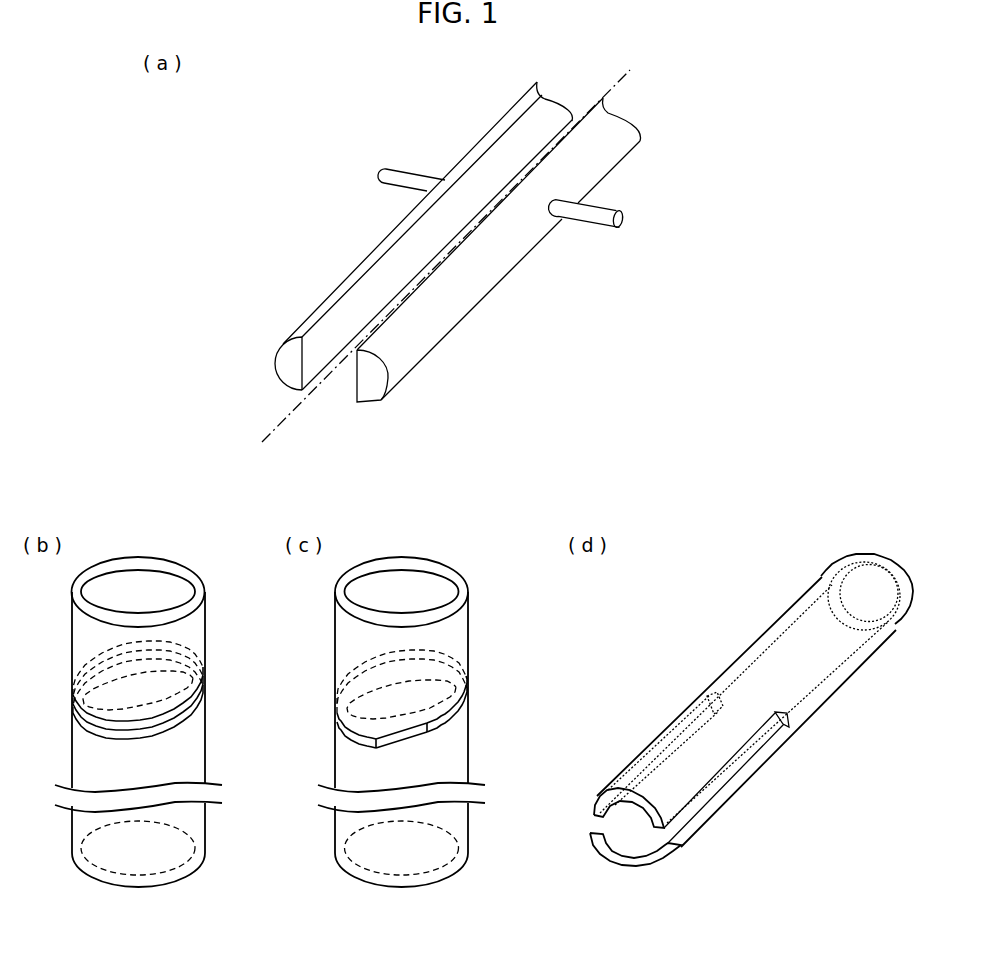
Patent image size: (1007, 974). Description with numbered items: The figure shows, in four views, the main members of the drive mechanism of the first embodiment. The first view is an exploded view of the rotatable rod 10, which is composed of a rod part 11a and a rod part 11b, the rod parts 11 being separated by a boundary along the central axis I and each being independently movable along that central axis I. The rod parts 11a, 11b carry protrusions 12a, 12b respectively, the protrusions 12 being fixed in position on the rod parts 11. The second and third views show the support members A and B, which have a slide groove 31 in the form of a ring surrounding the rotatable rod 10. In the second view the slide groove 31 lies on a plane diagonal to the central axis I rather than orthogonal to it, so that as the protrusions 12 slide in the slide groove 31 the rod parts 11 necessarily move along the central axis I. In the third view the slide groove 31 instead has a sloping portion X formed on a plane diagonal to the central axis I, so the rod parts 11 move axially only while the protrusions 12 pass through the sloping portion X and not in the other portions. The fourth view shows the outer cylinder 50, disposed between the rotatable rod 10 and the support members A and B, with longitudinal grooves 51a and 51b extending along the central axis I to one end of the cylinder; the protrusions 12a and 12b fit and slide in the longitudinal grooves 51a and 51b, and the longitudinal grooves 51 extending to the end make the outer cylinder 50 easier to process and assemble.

The rotatable rod 10 is at (431, 285).
The rod parts 11 is at (458, 291).
The rod part 11a is at (372, 393).
The rod part 11b is at (295, 363).
The protrusions 12 is at (511, 258).
The protrusion 12a is at (621, 226).
The protrusion 12b is at (410, 176).
The slide groove 31 is at (202, 683).
The outer cylinder 50 is at (732, 747).
The longitudinal grooves 51 is at (670, 817).
The longitudinal groove 51a is at (590, 816).
The longitudinal groove 51b is at (726, 806).
The support member A is at (205, 625).
The support member B is at (207, 757).
The sloping portion X is at (411, 668).
The central axis I is at (258, 444).